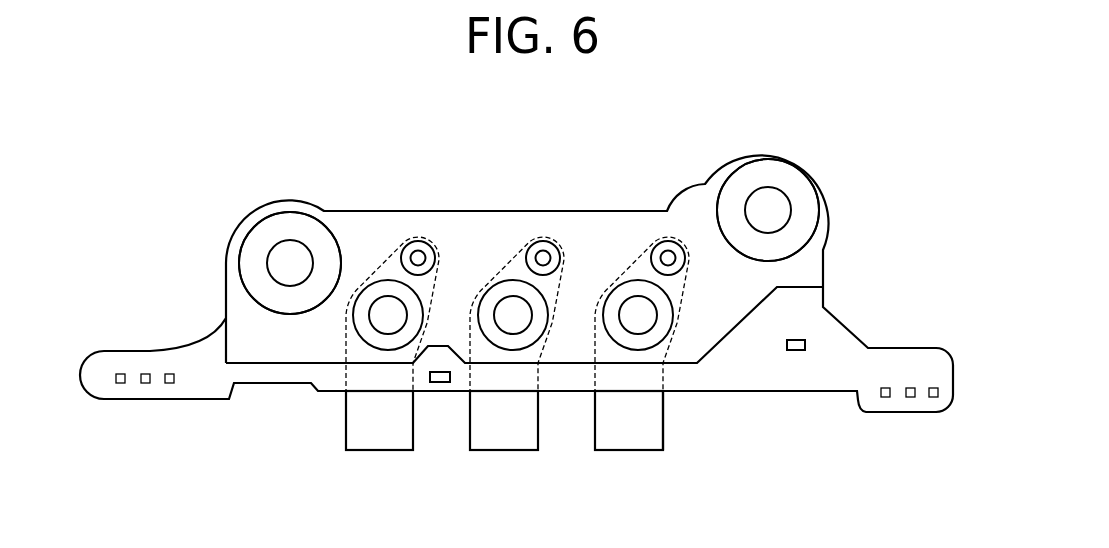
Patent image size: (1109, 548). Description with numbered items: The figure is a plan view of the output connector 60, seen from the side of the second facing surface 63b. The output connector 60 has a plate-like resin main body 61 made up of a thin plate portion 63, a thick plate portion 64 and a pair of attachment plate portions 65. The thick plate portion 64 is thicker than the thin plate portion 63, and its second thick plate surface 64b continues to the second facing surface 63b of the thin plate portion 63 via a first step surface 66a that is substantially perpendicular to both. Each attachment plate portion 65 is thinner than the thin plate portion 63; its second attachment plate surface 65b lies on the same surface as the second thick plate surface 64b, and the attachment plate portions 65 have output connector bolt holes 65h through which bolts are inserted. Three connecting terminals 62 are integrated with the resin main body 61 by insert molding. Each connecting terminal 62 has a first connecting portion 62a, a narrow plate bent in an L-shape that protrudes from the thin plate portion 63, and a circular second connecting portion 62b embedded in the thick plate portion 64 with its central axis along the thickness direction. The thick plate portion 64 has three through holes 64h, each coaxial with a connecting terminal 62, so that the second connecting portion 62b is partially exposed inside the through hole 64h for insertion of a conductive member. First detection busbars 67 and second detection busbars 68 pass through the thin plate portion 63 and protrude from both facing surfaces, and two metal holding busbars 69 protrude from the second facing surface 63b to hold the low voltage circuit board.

The output connector 60 is at (247, 216).
The resin main body 61 is at (828, 177).
The connecting terminal 62 is at (341, 428).
The first connecting portion 62a is at (378, 452).
The second connecting portion 62b is at (413, 300).
The thin plate portion 63 is at (738, 378).
The second facing surface 63b is at (813, 375).
The thick plate portion 64 is at (423, 240).
The second thick plate surface 64b is at (555, 220).
The through hole 64h is at (378, 284).
The attachment plate portion 65 is at (228, 243).
The second attachment plate surface 65b is at (265, 214).
The output connector bolt hole 65h is at (293, 253).
The first step surface 66a is at (645, 367).
The first detection busbar 67 is at (120, 383).
The second detection busbar 68 is at (885, 397).
The holding busbar 69 is at (440, 382).